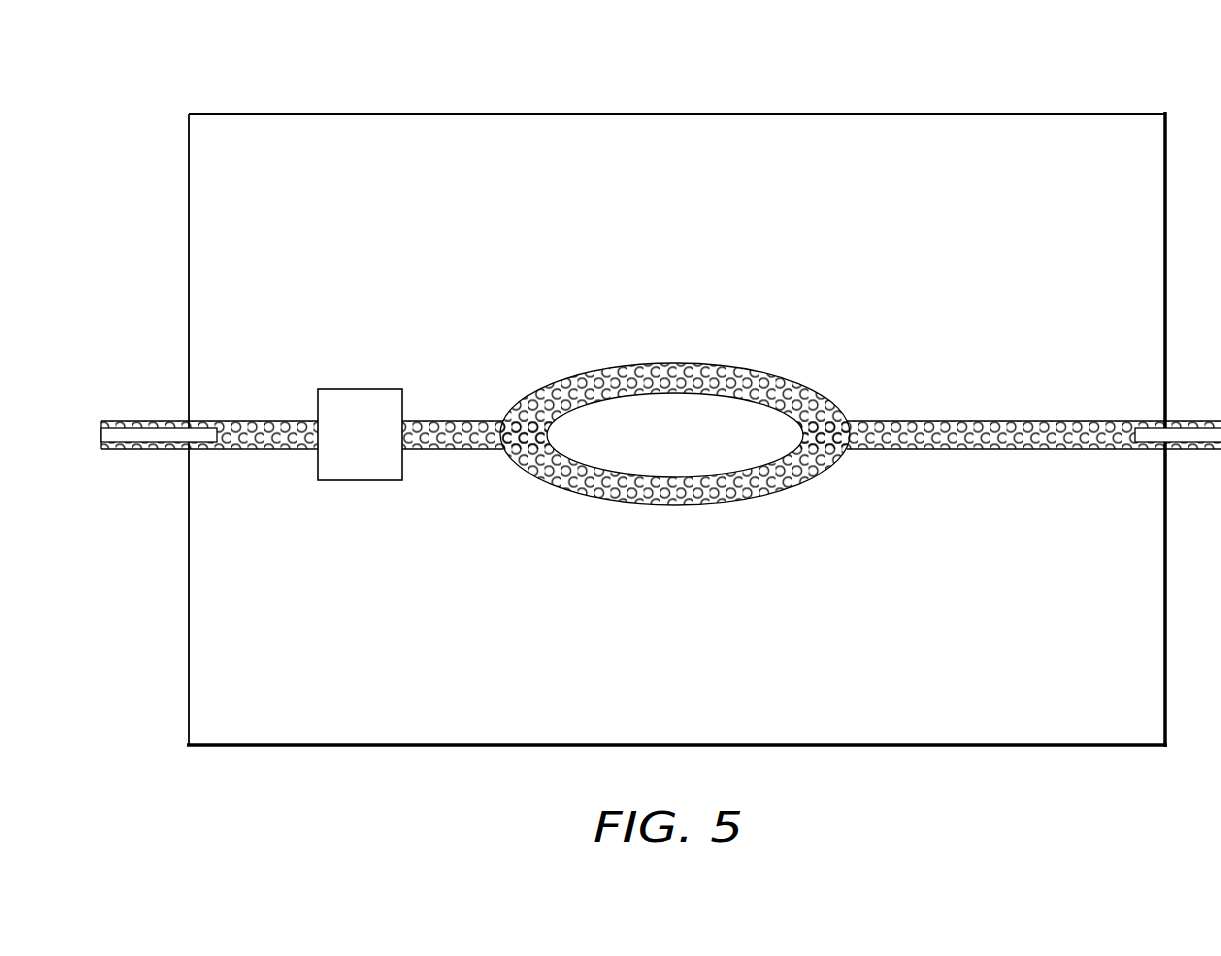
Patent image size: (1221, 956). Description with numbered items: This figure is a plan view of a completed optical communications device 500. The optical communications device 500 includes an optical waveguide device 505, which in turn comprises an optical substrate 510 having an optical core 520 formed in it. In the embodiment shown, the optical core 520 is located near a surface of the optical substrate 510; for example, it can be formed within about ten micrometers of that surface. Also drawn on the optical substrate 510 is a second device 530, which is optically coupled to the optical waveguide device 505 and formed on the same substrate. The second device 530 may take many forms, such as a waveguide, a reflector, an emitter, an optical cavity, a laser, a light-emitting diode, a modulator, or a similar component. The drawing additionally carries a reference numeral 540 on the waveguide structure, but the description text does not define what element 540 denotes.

The optical communications device 500 is at (610, 384).
The optical waveguide device 505 is at (938, 588).
The optical substrate 510 is at (200, 605).
The optical core 520 is at (521, 398).
The second device 530 is at (351, 395).
The waveguide 540 is at (118, 428).